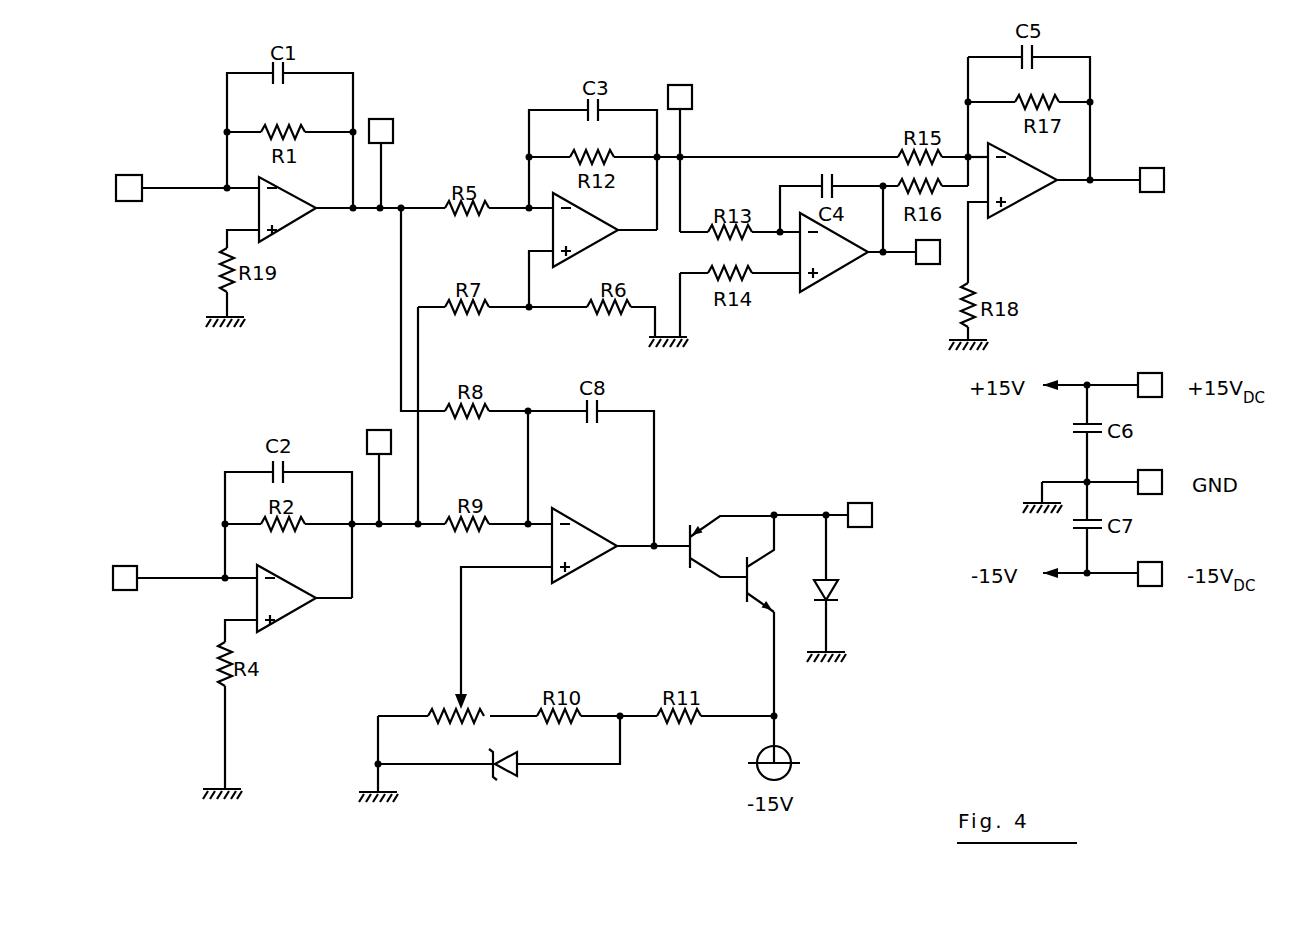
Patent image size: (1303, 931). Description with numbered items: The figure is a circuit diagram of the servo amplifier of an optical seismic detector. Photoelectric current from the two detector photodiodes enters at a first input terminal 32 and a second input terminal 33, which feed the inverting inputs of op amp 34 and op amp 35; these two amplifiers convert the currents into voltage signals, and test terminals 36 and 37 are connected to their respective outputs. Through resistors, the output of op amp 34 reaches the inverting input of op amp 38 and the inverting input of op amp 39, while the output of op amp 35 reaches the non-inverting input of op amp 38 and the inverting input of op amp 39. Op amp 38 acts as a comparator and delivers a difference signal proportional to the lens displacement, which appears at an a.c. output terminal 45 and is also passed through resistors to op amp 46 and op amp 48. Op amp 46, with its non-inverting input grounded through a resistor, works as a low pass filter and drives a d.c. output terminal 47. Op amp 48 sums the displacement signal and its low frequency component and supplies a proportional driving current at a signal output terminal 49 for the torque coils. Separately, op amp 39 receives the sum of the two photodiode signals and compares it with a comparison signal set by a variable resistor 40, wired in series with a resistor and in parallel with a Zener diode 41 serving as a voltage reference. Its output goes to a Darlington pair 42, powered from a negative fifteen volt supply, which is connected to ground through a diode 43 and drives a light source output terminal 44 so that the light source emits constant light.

The first input terminal 32 is at (143, 175).
The second input terminal 33 is at (135, 567).
The operational amplifier 34 is at (291, 221).
The operational amplifier 35 is at (290, 612).
The test terminal 36 is at (393, 120).
The test terminal 37 is at (368, 431).
The operational amplifier 38 is at (596, 241).
The operational amplifier 39 is at (588, 531).
The variable resistor 40 is at (452, 702).
The Zener diode 41 is at (522, 776).
The Darlington pair 42 is at (732, 508).
The diode 43 is at (842, 592).
The light source output terminal 44 is at (870, 504).
The a.c. output terminal 45 is at (684, 90).
The operational amplifier 46 is at (837, 267).
The d.c. output terminal 47 is at (917, 264).
The operational amplifier 48 is at (1028, 193).
The signal output terminal 49 is at (1141, 192).